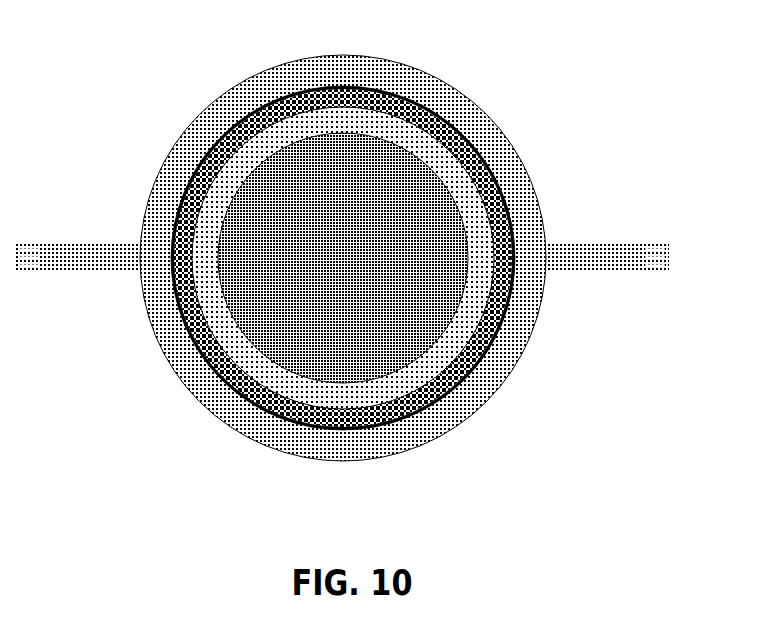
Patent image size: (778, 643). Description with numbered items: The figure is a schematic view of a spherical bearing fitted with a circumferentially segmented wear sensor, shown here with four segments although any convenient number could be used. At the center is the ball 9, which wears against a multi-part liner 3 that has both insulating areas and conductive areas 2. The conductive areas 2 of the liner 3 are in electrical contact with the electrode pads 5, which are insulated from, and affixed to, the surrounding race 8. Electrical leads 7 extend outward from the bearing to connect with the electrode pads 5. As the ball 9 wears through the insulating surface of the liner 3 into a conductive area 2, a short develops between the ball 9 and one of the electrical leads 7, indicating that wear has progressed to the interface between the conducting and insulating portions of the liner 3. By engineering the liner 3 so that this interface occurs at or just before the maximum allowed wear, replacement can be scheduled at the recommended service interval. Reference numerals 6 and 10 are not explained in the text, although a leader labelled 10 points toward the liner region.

The conductive areas 2 is at (502, 348).
The multi-part liner 3 is at (184, 335).
The electrode pads 5 is at (475, 390).
The lead 6 is at (678, 277).
The electrical leads 7 is at (674, 243).
The race 8 is at (190, 409).
The ball 9 is at (267, 381).
The braided layer 10 is at (173, 282).